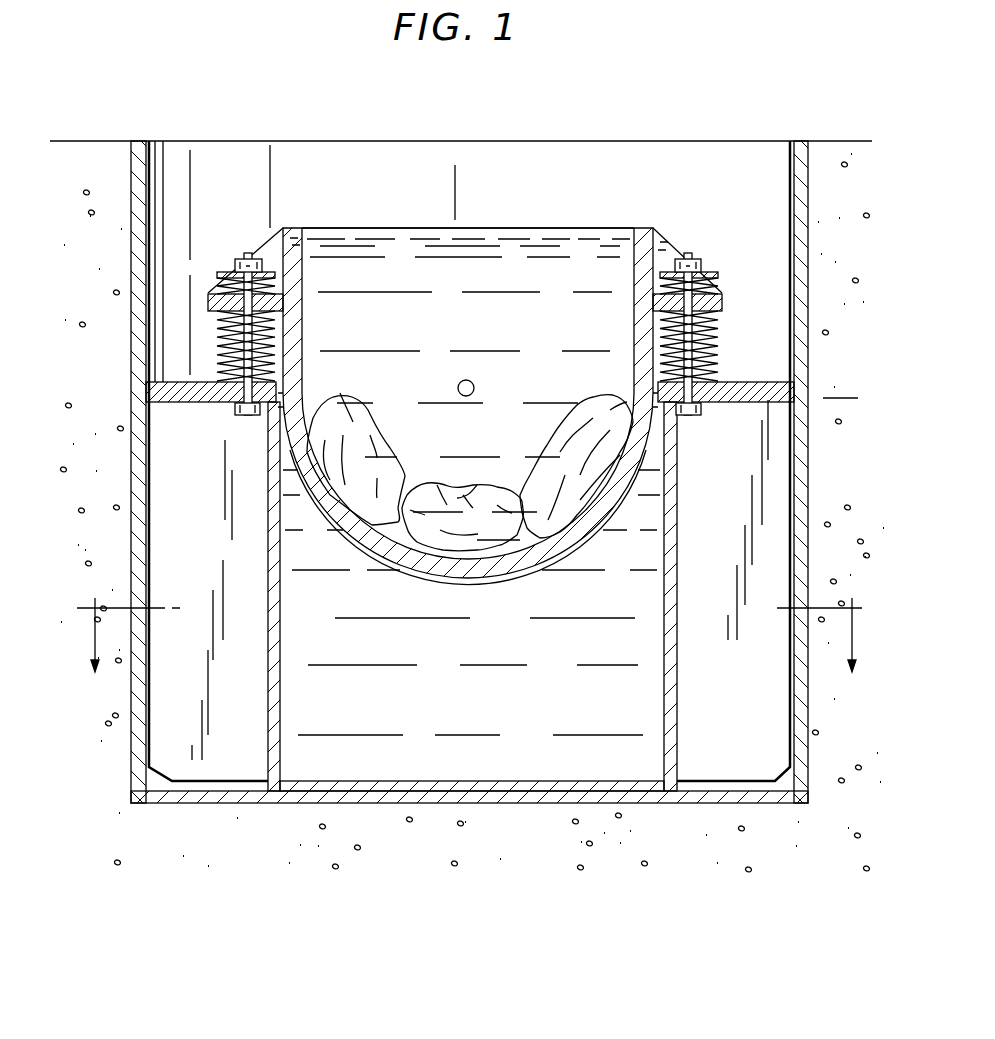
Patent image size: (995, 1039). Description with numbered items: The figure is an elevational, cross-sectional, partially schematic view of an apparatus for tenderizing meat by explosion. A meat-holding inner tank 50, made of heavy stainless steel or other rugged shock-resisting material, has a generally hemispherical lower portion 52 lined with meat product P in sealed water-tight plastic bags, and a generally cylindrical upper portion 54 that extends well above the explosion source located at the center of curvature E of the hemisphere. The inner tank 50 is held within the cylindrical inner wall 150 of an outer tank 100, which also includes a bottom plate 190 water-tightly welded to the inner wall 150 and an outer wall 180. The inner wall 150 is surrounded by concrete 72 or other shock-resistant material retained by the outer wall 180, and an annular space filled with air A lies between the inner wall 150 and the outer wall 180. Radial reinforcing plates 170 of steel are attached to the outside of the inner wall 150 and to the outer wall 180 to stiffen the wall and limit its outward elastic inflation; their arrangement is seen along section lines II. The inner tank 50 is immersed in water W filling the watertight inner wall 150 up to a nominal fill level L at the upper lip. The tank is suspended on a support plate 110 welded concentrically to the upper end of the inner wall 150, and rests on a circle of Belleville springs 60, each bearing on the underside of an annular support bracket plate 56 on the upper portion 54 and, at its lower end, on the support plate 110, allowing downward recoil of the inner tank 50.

The inner tank 50 is at (461, 394).
The lower portion 52 is at (490, 578).
The upper portion 54 is at (632, 318).
The support bracket plate 56 is at (205, 294).
The springs 60 is at (216, 320).
The concrete 72 is at (477, 843).
The outer tank 100 is at (253, 803).
The support plate 110 is at (205, 402).
The inner wall 150 is at (283, 718).
The radial reinforcing plates 170 is at (773, 500).
The outer wall 180 is at (148, 188).
The bottom plate 190 is at (505, 781).
The air A is at (177, 559).
The water W is at (466, 714).
The center of curvature E is at (458, 388).
The meat product P is at (557, 445).
The nominal fill level L is at (850, 398).
The section lines II- II is at (475, 626).